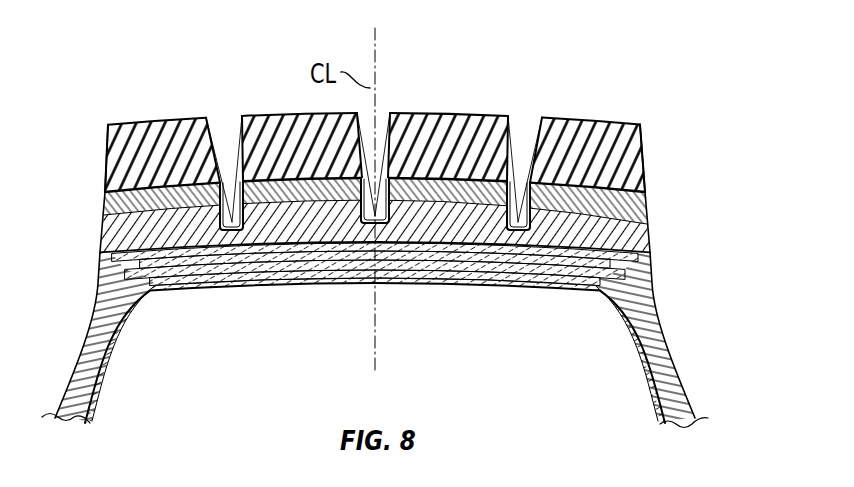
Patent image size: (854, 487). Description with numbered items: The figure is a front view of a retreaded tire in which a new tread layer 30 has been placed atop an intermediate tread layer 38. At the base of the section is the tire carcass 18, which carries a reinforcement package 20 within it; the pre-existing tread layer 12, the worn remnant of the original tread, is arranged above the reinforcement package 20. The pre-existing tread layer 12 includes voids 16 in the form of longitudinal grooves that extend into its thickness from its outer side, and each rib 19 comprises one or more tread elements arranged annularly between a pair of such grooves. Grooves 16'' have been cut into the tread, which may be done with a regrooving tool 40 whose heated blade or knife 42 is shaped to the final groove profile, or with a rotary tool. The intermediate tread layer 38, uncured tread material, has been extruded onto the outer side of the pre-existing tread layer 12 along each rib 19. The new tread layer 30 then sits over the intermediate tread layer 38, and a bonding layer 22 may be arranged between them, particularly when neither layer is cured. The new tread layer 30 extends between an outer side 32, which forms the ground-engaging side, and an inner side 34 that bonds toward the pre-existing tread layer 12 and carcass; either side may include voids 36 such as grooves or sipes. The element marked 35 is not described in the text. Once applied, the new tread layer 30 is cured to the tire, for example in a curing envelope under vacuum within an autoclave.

The pre-existing tread layer 12 is at (393, 214).
The voids 16 is at (393, 258).
The grooves 16'' is at (389, 125).
The tire carcass 18 is at (683, 384).
The rib 19 is at (399, 96).
The reinforcement package 20 is at (628, 277).
The bonding layer 22 is at (636, 190).
The new tread layer 30 is at (645, 150).
The outer side 32 is at (595, 117).
The inner side 34 is at (167, 182).
The belt package 35 is at (198, 237).
The voids 36 is at (242, 116).
The intermediate tread layer 38 is at (115, 208).
The regrooving tool 40 is at (104, 192).
The heated blade or knife 42 is at (112, 238).